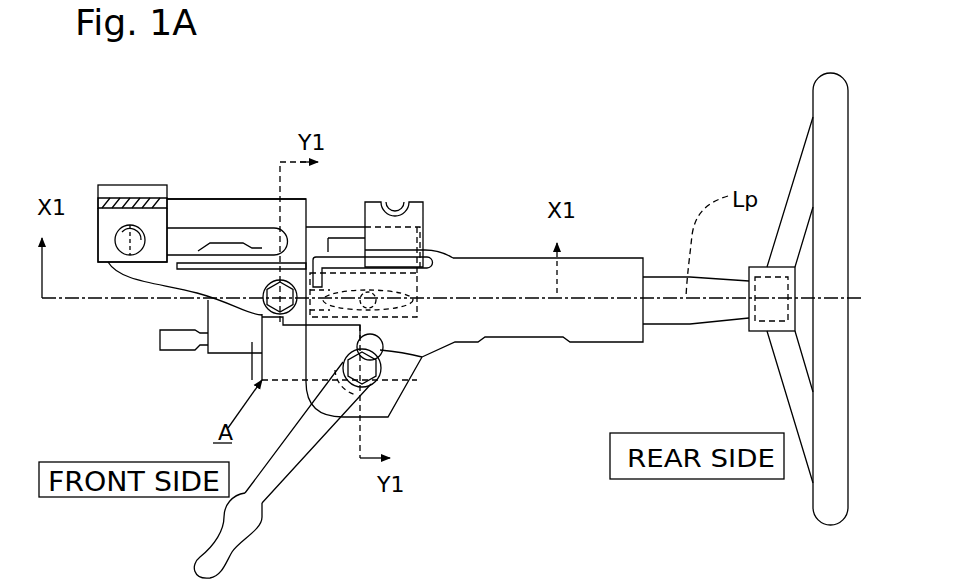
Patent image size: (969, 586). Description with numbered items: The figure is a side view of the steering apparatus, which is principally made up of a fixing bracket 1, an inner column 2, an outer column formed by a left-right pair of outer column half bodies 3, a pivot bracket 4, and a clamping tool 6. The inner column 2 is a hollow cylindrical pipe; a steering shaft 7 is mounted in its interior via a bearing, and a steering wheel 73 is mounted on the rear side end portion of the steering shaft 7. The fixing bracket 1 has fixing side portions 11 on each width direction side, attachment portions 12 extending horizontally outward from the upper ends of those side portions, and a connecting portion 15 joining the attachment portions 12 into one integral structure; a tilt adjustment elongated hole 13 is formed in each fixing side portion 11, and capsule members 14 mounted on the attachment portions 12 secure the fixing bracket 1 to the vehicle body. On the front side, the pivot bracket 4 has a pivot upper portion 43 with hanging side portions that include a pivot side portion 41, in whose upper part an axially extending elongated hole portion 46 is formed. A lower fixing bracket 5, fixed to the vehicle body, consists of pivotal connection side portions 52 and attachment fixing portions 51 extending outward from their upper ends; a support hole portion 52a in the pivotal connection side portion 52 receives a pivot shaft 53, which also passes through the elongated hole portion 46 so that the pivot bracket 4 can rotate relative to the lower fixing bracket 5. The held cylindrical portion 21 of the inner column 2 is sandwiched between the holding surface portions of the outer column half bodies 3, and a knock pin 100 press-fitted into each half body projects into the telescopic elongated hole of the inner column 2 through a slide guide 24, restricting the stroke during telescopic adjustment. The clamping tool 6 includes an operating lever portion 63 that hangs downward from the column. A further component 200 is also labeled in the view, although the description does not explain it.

The fixing bracket 1 is at (393, 418).
The inner column 2 is at (603, 256).
The outer column half body 3 is at (293, 370).
The pivot bracket 4 is at (238, 198).
The lower fixing bracket 5 is at (147, 183).
The clamping tool 6 is at (315, 460).
The steering shaft 7 is at (675, 277).
The fixing side portion 11 is at (392, 398).
The attachment portion 12 is at (352, 256).
The tilt adjustment elongated hole 13 is at (422, 357).
The capsule member 14 is at (427, 250).
The connecting portion 15 is at (418, 202).
The held cylindrical portion 21 is at (251, 381).
The slide guide 24 is at (427, 307).
The pivot side portion 41 is at (177, 214).
The pivot upper portion 43 is at (255, 200).
The elongated hole portion 46 is at (226, 232).
The attachment fixing portion 51 is at (128, 195).
The pivotal connection side portion 52 is at (120, 215).
The pivot shaft 53 is at (133, 242).
The support hole portion 52a is at (128, 256).
The operating lever portion 63 is at (285, 473).
The steering wheel 73 is at (828, 100).
The knock pin 100 is at (420, 290).
The striker 200 is at (262, 306).